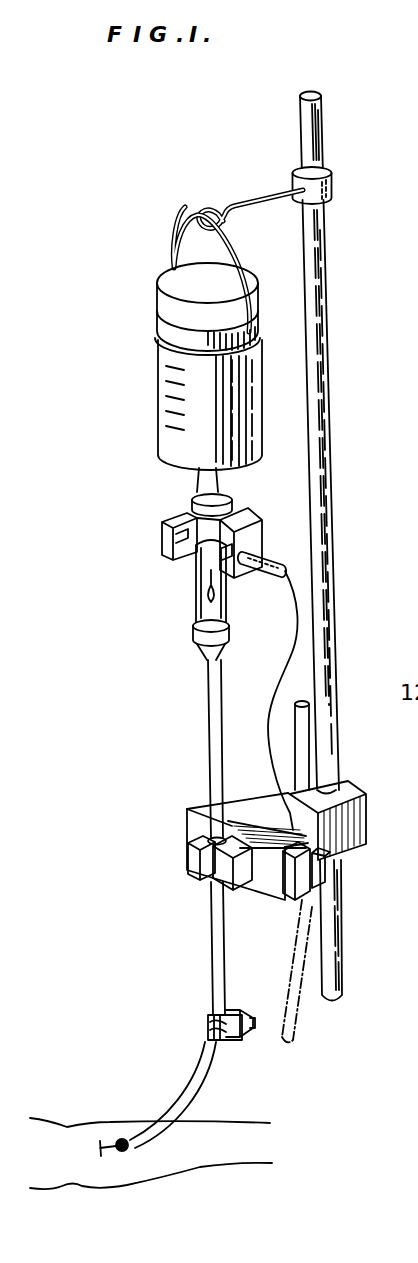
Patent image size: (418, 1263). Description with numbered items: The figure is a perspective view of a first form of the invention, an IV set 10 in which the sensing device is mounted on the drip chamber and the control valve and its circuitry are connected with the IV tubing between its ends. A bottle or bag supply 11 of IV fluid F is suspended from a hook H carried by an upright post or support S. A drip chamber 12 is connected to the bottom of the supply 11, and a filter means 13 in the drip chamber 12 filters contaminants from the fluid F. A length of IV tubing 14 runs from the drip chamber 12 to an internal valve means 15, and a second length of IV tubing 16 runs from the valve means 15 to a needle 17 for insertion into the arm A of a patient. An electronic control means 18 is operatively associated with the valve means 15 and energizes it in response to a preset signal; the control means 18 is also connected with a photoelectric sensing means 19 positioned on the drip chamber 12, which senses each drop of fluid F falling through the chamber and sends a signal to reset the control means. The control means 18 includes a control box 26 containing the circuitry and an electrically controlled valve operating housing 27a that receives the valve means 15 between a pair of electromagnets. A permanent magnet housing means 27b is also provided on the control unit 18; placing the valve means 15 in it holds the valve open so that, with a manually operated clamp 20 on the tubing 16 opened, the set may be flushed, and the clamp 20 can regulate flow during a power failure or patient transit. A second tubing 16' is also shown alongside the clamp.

The IV set 10 is at (100, 583).
The supply 11 is at (157, 357).
The drip chamber 12 is at (193, 571).
The filter means 13 is at (210, 603).
The IV tubing 14 is at (203, 692).
The valve means 15 is at (192, 842).
The IV tubing 16 is at (184, 948).
The second tubing 16' is at (347, 871).
The needle 17 is at (116, 1143).
The electronic control means 18 is at (184, 810).
The photoelectric sensing means 19 is at (252, 512).
The manually operated clamp 20 is at (245, 1045).
The control box 26 is at (263, 893).
The valve operating housing 27a is at (200, 863).
The permanent magnet housing means 27b is at (322, 872).
The arm A is at (187, 1168).
The IV fluid F is at (250, 398).
The hook H is at (260, 195).
The support S is at (325, 350).